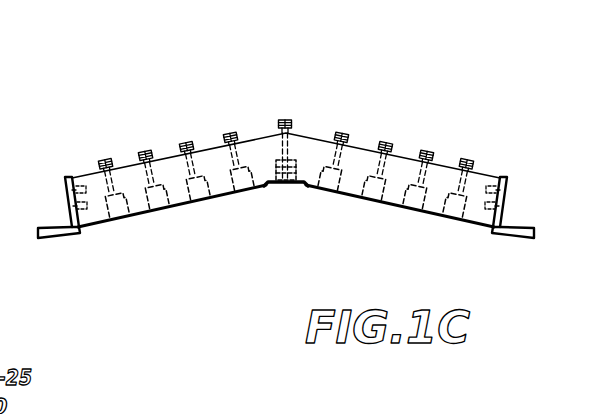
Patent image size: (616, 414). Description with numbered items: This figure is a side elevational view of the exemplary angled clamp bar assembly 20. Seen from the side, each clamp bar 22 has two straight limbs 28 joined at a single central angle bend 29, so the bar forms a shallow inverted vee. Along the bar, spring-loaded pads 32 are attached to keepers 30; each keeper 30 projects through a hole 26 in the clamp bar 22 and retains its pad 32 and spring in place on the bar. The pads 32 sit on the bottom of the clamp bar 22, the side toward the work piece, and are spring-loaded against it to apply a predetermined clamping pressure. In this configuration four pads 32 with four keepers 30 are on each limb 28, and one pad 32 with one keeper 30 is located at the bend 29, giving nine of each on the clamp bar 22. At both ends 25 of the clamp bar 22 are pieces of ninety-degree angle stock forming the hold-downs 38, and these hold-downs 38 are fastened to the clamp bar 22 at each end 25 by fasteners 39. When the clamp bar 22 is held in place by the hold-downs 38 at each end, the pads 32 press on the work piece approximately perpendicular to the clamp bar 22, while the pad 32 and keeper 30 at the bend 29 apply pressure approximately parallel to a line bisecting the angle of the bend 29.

The angled clamp bar assembly 20 is at (277, 250).
The clamp bar 22 is at (480, 182).
The end of the clamp bar 25 is at (68, 92).
The hole 26 is at (467, 215).
The straight limb 28 is at (160, 72).
The central angle bend 29 is at (287, 62).
The keeper 30 is at (488, 120).
The spring-loaded pad 32 is at (457, 220).
The hold-down 38 is at (57, 238).
The fastener 39 is at (67, 197).